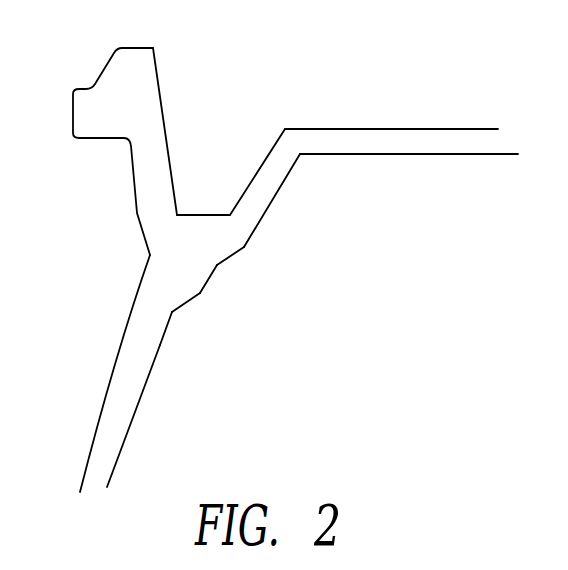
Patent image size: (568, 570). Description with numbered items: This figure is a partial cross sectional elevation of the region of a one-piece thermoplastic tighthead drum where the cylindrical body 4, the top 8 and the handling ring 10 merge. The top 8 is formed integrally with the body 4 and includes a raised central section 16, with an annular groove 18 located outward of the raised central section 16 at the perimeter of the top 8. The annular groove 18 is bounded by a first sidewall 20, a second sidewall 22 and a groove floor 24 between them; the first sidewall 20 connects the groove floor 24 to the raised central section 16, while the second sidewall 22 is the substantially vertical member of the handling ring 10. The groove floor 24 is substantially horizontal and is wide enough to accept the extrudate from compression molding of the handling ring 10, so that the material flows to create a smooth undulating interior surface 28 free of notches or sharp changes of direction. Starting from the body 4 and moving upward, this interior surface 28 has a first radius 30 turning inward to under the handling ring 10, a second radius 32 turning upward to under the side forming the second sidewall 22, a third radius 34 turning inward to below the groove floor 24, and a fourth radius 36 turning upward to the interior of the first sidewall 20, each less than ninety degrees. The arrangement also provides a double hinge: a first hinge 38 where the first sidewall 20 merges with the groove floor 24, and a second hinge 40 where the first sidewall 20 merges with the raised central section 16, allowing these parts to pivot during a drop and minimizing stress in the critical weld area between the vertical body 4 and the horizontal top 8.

The cylindrical body 4 is at (95, 467).
The top 8 is at (334, 96).
The handling ring 10 is at (138, 57).
The raised central section 16 is at (387, 137).
The annular groove 18 is at (217, 121).
The first sidewall 20 is at (268, 180).
The second sidewall 22 is at (153, 156).
The groove floor 24 is at (200, 215).
The interior surface 28 is at (154, 357).
The first radius 30 is at (172, 312).
The second radius 32 is at (200, 293).
The third radius 34 is at (217, 265).
The fourth radius 36 is at (244, 247).
The first hinge 38 is at (232, 227).
The second hinge 40 is at (301, 154).